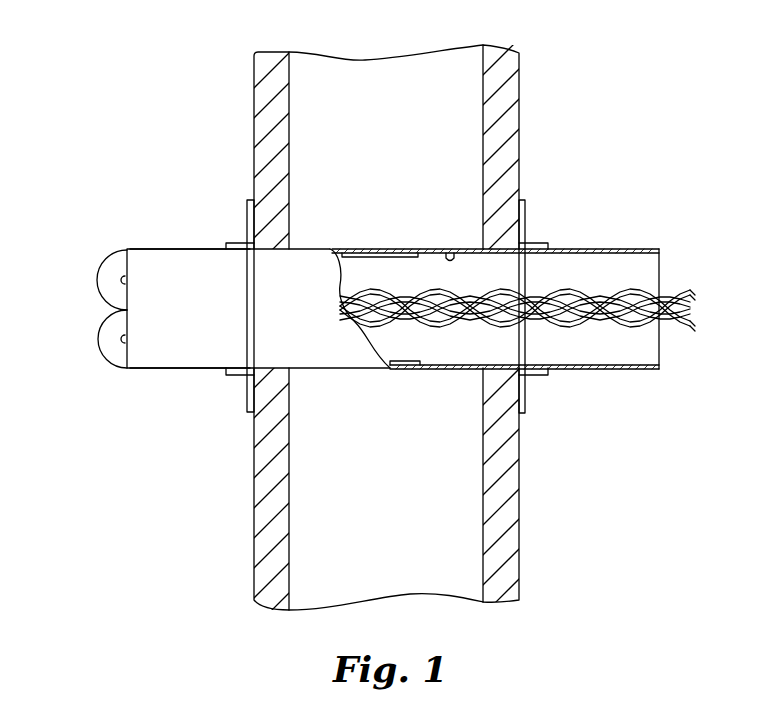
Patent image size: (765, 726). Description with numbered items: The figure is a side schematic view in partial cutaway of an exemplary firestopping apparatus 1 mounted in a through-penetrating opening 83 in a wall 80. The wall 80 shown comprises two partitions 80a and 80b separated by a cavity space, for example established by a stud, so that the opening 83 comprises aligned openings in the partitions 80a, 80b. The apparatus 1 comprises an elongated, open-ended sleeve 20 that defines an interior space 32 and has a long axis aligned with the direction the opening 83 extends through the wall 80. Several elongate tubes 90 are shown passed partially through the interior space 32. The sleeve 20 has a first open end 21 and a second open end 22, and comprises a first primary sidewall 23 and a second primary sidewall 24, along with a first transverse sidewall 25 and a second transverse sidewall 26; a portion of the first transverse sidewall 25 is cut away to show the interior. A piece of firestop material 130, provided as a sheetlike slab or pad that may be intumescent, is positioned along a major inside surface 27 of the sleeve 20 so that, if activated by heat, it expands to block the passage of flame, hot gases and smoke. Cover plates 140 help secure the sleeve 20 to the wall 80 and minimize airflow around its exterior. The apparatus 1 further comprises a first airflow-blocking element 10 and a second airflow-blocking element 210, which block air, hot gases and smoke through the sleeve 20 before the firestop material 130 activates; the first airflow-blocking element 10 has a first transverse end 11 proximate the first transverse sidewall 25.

The firestopping apparatus 1 is at (139, 192).
The first airflow-blocking element 10 is at (104, 263).
The first transverse end 11 is at (120, 260).
The sleeve 20 is at (139, 363).
The first open end 21 is at (71, 272).
The second open end 22 is at (680, 267).
The first primary sidewall 23 is at (179, 248).
The second primary sidewall 24 is at (574, 370).
The first transverse sidewall 25 is at (188, 350).
The second transverse sidewall 26 is at (600, 258).
The major inside surface 27 is at (452, 250).
The interior space 32 is at (529, 356).
The wall 80 is at (273, 52).
The first partition 80a is at (265, 101).
The second partition 80b is at (510, 73).
The through-penetrating opening 83 is at (469, 356).
The elongate tube 90 is at (677, 323).
The firestop material 130 is at (386, 250).
The cover plate 140 is at (250, 392).
The second airflow-blocking element 210 is at (101, 338).